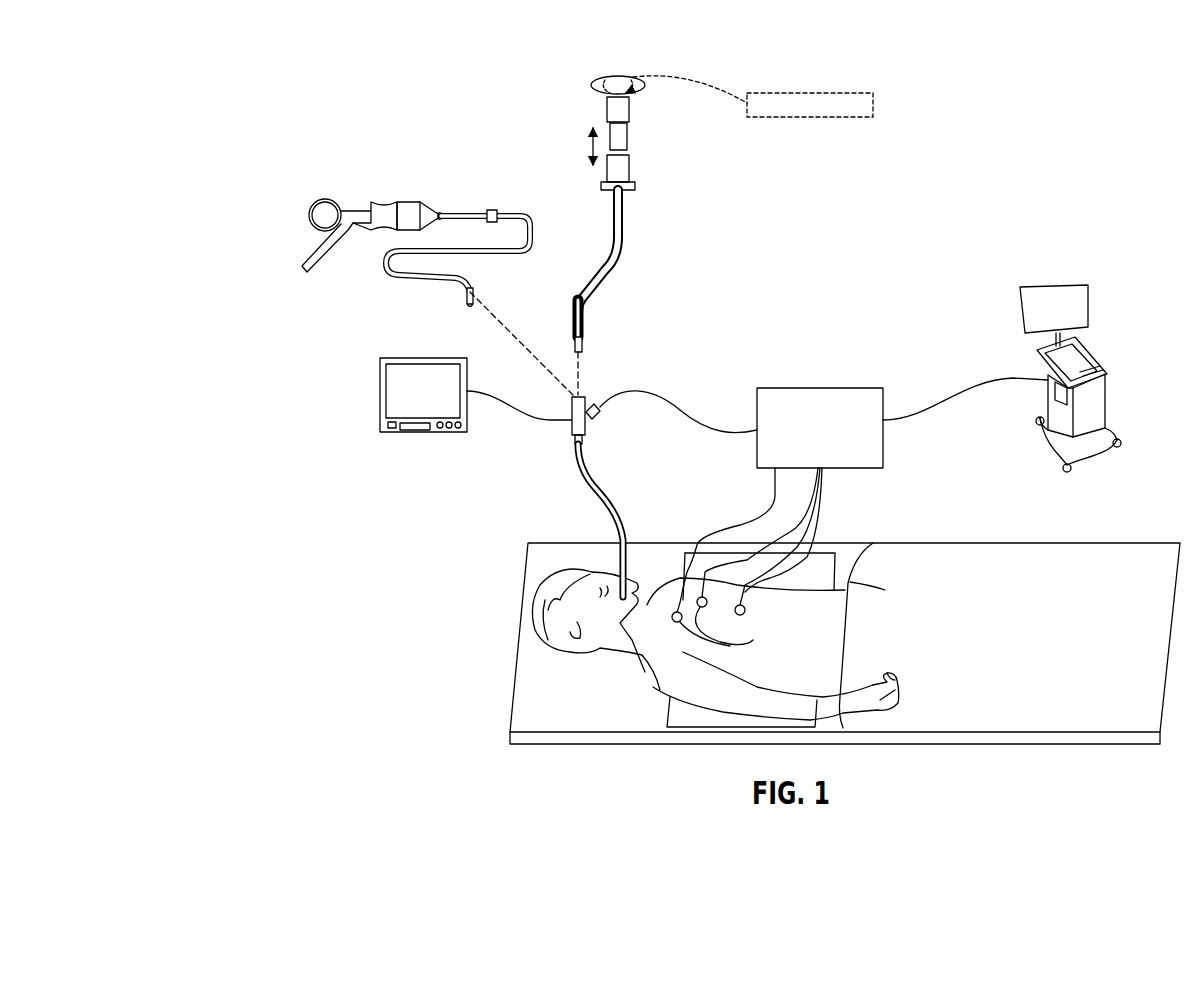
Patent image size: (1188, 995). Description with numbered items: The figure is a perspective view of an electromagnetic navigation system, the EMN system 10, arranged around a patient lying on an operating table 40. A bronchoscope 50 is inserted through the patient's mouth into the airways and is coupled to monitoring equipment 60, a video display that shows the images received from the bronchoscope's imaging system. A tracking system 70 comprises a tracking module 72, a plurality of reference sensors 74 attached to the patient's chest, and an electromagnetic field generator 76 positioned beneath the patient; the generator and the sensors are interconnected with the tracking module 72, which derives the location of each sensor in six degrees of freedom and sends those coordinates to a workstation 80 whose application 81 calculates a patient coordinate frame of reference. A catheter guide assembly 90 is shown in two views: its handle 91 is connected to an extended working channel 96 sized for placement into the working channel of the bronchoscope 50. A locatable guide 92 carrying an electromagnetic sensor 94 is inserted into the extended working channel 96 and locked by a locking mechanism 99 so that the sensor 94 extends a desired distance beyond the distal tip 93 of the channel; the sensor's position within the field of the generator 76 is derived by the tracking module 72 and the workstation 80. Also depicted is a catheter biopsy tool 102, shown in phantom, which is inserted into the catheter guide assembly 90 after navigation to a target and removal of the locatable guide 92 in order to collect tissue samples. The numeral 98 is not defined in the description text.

The EMN system 10 is at (1070, 230).
The operating table 40 is at (524, 684).
The bronchoscope 50 is at (588, 475).
The monitoring equipment 60 is at (392, 430).
The tracking system 70 is at (860, 353).
The tracking module 72 is at (832, 441).
The reference sensors 74 is at (745, 640).
The electromagnetic field generator 76 is at (682, 718).
The workstation 80 is at (1096, 378).
The application 81 is at (1088, 305).
The catheter guide assembly 90 is at (309, 161).
The handle 91 is at (440, 195).
The locatable guide 92 is at (464, 210).
The distal tip 93 is at (468, 306).
The electromagnetic sensor 94 is at (472, 290).
The extended working channel 96 is at (532, 233).
The light source 98 is at (606, 102).
The locking mechanism 99 is at (497, 212).
The catheter biopsy tool 102 is at (881, 100).